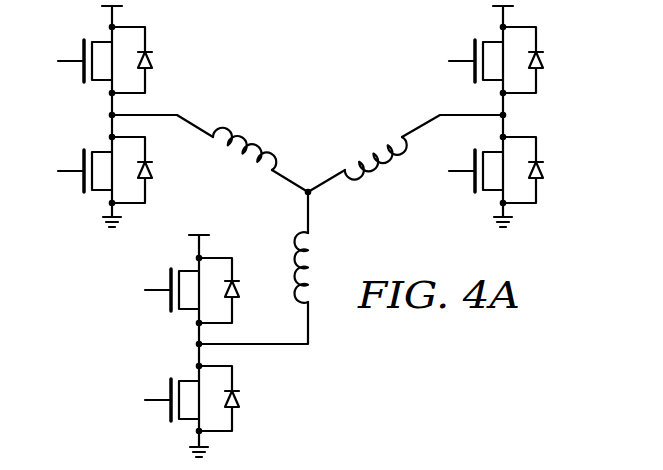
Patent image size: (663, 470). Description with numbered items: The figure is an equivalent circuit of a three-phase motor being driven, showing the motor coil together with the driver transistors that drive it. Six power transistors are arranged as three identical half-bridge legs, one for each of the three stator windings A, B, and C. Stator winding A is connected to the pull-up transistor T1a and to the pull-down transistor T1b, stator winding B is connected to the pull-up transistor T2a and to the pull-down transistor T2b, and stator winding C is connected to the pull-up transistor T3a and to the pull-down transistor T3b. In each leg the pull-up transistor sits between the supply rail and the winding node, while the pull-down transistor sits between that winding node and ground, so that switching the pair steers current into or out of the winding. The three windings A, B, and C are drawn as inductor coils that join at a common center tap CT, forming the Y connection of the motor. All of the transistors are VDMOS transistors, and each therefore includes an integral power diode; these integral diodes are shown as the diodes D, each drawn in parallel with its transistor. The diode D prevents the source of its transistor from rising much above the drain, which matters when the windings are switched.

The pull-up transistor T1a is at (78, 53).
The pull-down transistor T1b is at (78, 179).
The pull-up transistor T2a is at (468, 53).
The pull-down transistor T2b is at (468, 179).
The pull-up transistor T3a is at (164, 283).
The pull-down transistor T3b is at (164, 406).
The integral power diode D is at (337, 229).
The stator winding A is at (95, 115).
The stator winding B is at (521, 115).
The stator winding C is at (182, 345).
The center tap CT is at (323, 202).